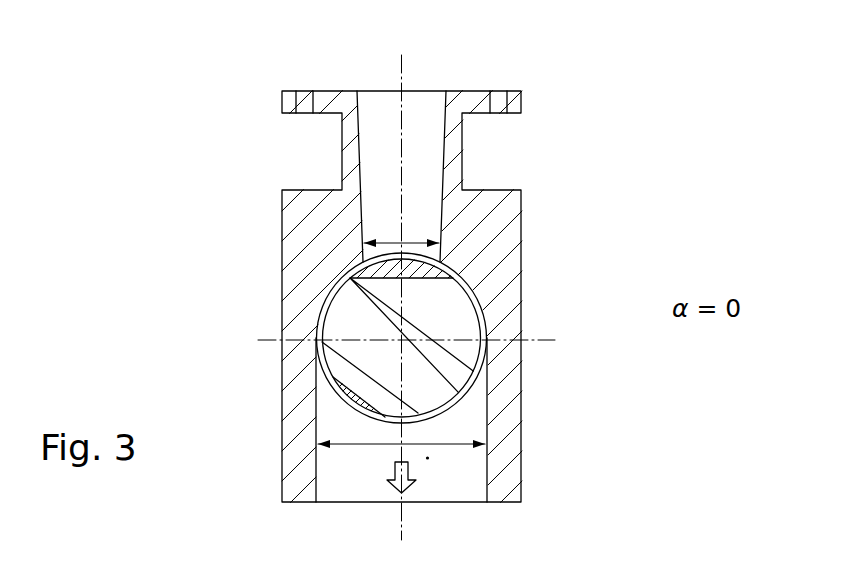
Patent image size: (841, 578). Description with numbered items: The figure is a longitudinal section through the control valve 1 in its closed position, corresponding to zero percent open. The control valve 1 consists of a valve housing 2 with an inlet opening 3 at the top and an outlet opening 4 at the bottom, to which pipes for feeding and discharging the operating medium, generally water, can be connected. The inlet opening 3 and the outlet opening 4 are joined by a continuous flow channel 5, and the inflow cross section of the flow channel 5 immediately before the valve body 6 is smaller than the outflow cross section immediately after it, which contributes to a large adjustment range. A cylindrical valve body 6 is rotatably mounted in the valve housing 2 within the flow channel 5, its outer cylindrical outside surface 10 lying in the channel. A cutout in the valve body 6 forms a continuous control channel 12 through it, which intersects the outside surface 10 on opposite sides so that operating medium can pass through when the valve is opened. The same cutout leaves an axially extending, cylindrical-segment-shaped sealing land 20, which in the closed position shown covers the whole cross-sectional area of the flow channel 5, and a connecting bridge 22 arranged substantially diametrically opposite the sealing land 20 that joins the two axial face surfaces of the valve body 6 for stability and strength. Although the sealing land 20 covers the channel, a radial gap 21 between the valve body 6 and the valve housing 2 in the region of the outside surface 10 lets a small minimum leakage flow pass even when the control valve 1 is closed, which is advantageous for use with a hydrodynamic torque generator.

The control valve 1 is at (630, 90).
The valve housing 2 is at (478, 222).
The inlet opening 3 is at (428, 92).
The outlet opening 4 is at (432, 503).
The flow channel 5 is at (362, 453).
The valve body 6 is at (448, 405).
The outside surface 10 is at (353, 403).
The control channel 12 is at (445, 317).
The sealing land 20 is at (360, 297).
The radial gap 21 is at (354, 276).
The connecting bridge 22 is at (340, 389).